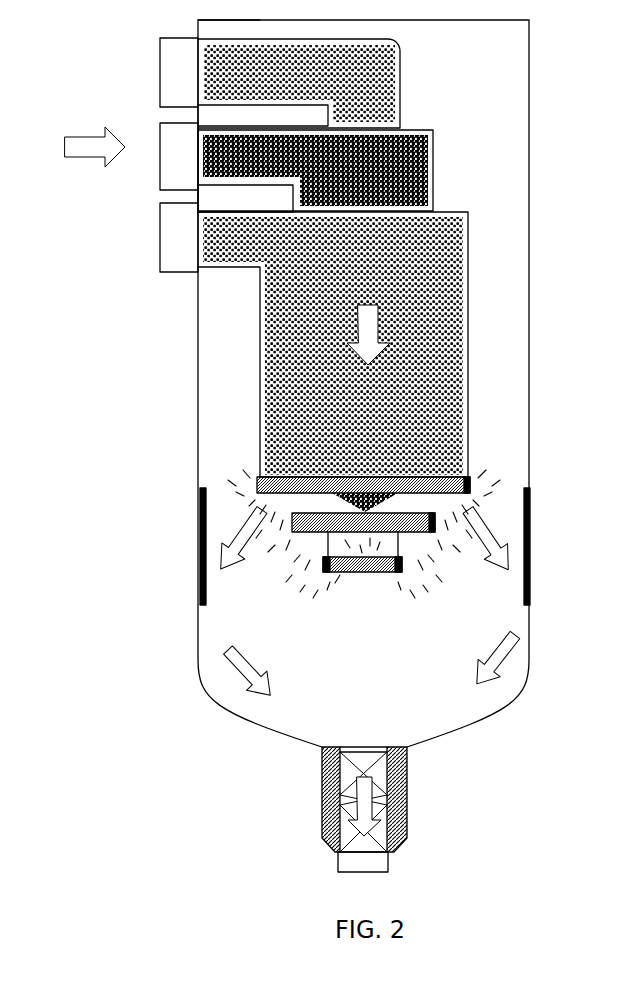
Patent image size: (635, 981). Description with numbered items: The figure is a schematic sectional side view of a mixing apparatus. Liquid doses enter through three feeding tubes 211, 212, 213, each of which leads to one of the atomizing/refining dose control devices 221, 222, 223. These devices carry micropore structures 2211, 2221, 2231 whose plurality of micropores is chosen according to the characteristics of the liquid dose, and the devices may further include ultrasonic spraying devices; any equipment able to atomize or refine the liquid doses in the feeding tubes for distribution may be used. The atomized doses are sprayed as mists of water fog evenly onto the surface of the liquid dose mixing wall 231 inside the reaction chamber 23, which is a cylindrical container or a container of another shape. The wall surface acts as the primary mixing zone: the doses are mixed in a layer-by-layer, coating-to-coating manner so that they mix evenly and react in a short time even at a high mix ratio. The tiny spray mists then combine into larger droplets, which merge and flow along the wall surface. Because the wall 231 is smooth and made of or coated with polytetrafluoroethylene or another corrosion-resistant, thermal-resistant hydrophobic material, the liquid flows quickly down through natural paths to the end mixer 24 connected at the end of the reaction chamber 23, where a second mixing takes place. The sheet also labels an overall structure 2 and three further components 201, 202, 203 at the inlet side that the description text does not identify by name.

The filter device 2 is at (178, 29).
The first inlet 201 is at (160, 58).
The second inlet 202 is at (160, 183).
The third inlet 203 is at (160, 236).
The feeding tube 211 is at (400, 80).
The feeding tube 212 is at (433, 193).
The feeding tube 213 is at (468, 410).
The reaction chamber 23 is at (529, 105).
The end mixer 24 is at (322, 770).
The atomizing/refining dose control device 223 is at (292, 477).
The micropore structure 2231 is at (470, 480).
The atomizing/refining dose control device 222 is at (422, 534).
The micropore structure 2221 is at (440, 522).
The atomizing/refining dose control device 221 is at (390, 573).
The micropore structure 2211 is at (328, 575).
The liquid dose mixing wall 231 is at (205, 594).